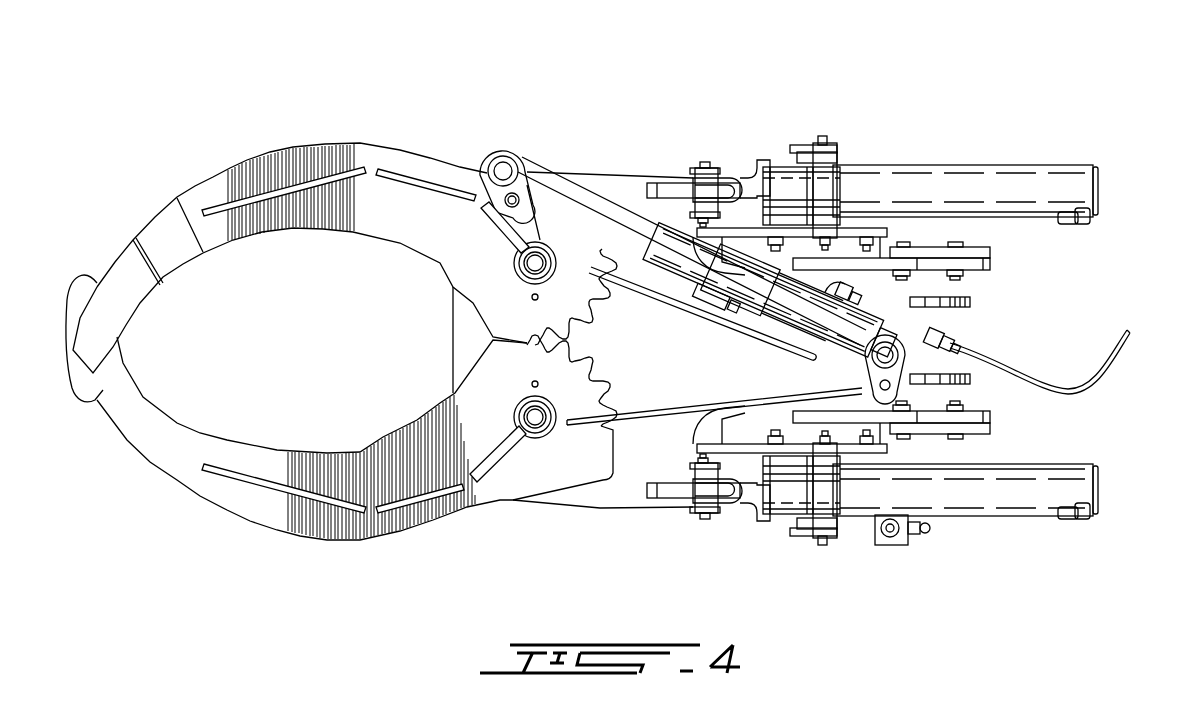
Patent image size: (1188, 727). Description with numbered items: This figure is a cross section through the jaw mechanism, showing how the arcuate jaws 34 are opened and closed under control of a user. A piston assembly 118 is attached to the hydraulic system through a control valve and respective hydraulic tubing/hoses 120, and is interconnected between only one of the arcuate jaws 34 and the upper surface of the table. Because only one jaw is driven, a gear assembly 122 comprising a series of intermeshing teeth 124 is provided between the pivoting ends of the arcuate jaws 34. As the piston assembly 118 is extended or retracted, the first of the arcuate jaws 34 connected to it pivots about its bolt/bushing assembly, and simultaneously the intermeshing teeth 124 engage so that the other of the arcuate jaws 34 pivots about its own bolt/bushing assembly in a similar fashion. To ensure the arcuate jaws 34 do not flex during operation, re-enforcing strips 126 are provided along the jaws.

The arcuate jaw 34 is at (333, 207).
The piston assembly 118 is at (790, 303).
The hydraulic tubing/hoses 120 is at (1017, 365).
The gear assembly 122 is at (593, 350).
The intermeshing teeth 124 is at (592, 347).
The re-enforcing strip 126 is at (433, 187).